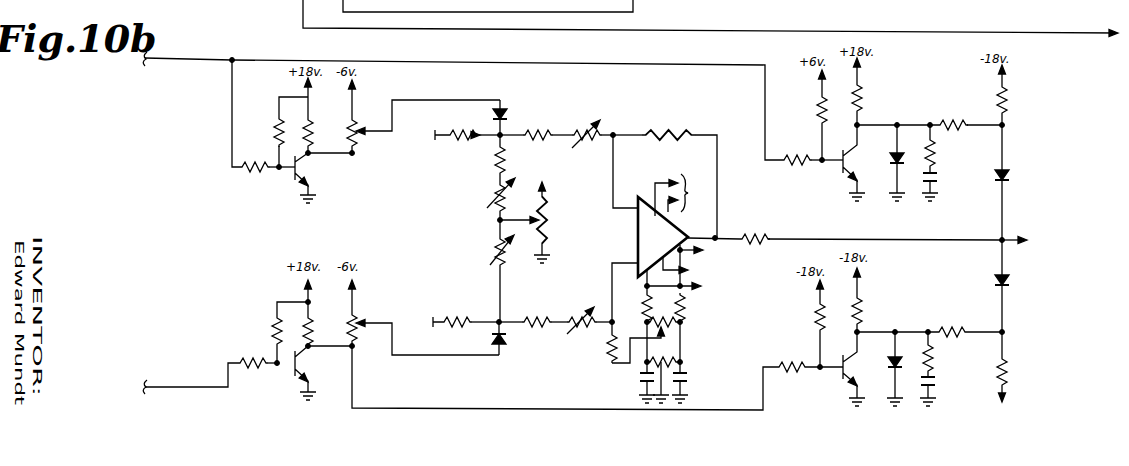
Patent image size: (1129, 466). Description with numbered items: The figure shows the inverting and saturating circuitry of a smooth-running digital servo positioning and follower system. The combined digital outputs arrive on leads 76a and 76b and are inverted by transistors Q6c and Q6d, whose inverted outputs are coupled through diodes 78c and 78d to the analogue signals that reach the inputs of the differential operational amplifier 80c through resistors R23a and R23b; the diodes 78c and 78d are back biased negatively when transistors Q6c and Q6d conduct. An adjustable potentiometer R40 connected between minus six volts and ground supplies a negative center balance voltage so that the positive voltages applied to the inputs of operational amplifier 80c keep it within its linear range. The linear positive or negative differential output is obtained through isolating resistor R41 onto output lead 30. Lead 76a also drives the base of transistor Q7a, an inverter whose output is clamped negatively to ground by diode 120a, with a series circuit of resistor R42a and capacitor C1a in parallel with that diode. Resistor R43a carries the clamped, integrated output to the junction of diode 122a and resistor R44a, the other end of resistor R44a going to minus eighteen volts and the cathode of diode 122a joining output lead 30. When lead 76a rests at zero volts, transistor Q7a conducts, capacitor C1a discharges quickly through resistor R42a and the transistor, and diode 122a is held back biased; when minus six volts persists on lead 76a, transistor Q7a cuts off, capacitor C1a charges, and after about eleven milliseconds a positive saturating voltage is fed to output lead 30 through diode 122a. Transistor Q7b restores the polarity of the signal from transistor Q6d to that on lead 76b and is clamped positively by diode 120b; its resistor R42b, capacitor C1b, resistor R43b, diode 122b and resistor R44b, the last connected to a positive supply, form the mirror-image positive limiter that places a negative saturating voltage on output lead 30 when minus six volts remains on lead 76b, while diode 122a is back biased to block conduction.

The lead 76a is at (198, 62).
The lead 76b is at (1072, 31).
The transistor Q6c is at (290, 178).
The transistor Q6d is at (292, 373).
The diode 78c is at (509, 116).
The diode 78d is at (505, 342).
The resistor R23a is at (467, 139).
The resistor R23b is at (464, 315).
The adjustable potentiometer R40 is at (537, 214).
The operational amplifier 80c is at (692, 234).
The isolating resistor R41 is at (770, 226).
The transistor Q7a is at (840, 174).
The transistor Q7b is at (840, 381).
The diode 120a is at (890, 160).
The diode 120b is at (892, 354).
The resistor R42a is at (934, 162).
The resistor R42b is at (933, 360).
The capacitor C1a is at (936, 180).
The capacitor C1b is at (934, 386).
The resistor R43a is at (945, 125).
The resistor R43b is at (953, 330).
The resistor R44a is at (1005, 108).
The resistor R44b is at (1006, 372).
The diode 122a is at (1009, 178).
The diode 122b is at (1010, 283).
The output lead 30 is at (1011, 237).